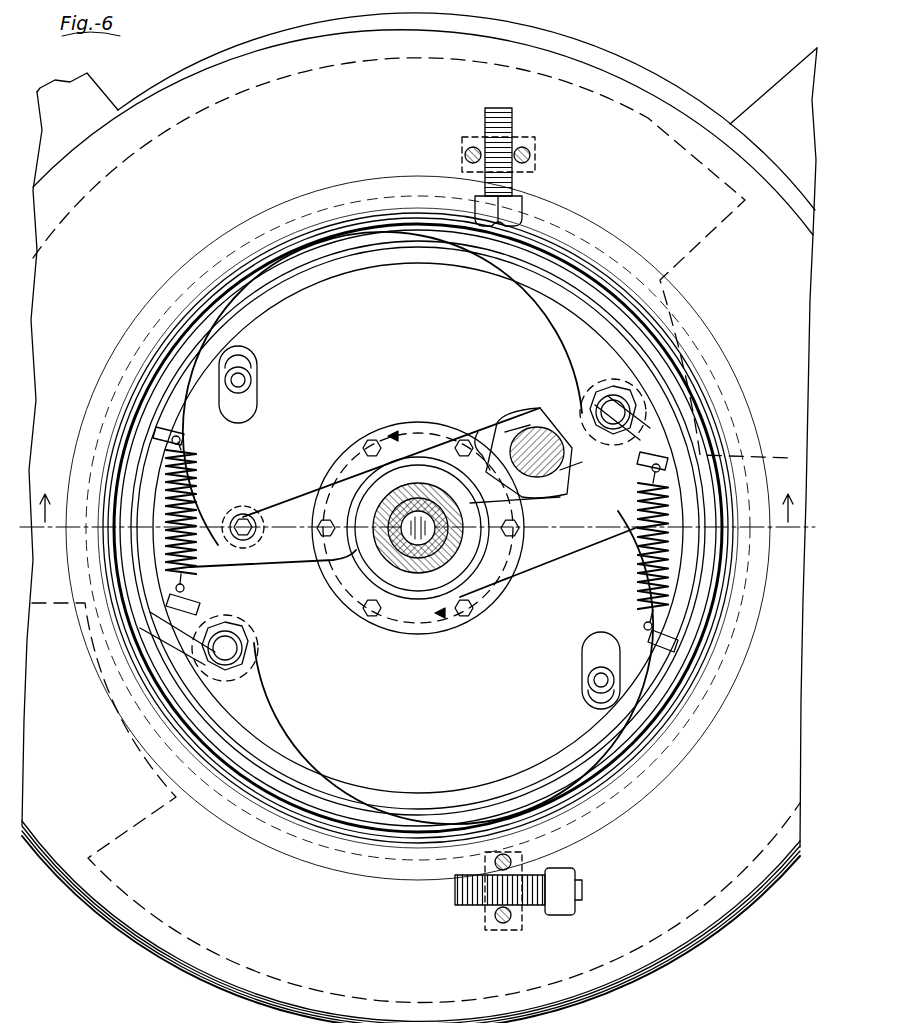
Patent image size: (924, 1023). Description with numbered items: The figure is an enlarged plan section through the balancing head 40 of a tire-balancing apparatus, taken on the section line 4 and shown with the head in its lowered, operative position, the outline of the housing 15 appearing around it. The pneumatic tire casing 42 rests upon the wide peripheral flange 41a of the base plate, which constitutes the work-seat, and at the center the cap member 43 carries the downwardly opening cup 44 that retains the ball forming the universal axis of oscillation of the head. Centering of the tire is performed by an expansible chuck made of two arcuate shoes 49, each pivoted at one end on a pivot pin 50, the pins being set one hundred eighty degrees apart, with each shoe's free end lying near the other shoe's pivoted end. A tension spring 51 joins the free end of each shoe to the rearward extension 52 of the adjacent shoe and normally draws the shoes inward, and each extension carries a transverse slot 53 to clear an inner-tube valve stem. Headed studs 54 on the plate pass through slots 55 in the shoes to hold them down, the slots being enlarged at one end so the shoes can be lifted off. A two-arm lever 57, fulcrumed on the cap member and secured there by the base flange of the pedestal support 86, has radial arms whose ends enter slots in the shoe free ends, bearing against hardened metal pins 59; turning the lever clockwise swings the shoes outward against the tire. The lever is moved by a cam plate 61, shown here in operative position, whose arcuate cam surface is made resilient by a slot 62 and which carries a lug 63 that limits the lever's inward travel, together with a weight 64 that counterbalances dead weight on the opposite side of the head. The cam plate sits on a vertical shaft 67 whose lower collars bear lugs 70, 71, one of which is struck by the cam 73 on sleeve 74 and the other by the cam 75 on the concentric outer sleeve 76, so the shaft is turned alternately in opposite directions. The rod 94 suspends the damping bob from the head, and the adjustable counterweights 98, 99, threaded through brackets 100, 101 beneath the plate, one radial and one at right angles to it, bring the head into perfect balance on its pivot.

The section line 4 is at (417, 523).
The housing 15 is at (765, 102).
The balancing head 40 is at (418, 528).
The peripheral flange 41a is at (655, 118).
The pneumatic tire casing 42 is at (187, 955).
The cap member 43 is at (420, 560).
The cup 44 is at (395, 512).
The arcuate shoe 49 is at (408, 320).
The pivot pin 50 is at (604, 400).
The tension spring 51 is at (196, 470).
The rearward extension 52 is at (196, 604).
The transverse slot 53 is at (200, 612).
The headed stud 54 is at (252, 386).
The slot 55 is at (250, 352).
The two-arm lever 57 is at (300, 560).
The hardened metal pin 59 is at (178, 588).
The cam plate 61 is at (535, 428).
The slot 62 is at (548, 494).
The lug 63 is at (478, 440).
The weight 64 is at (548, 425).
The vertical shaft 67 is at (580, 460).
The lug 70 is at (505, 430).
The lug 71 is at (418, 528).
The cam 73 is at (440, 438).
The sleeve 74 is at (350, 484).
The cam 75 is at (470, 610).
The sleeve 76 is at (395, 618).
The pedestal support 86 is at (385, 558).
The rod 94 is at (250, 514).
The counterweight 98 is at (515, 118).
The counterweight 99 is at (578, 900).
The bracket 100 is at (538, 165).
The bracket 101 is at (490, 932).